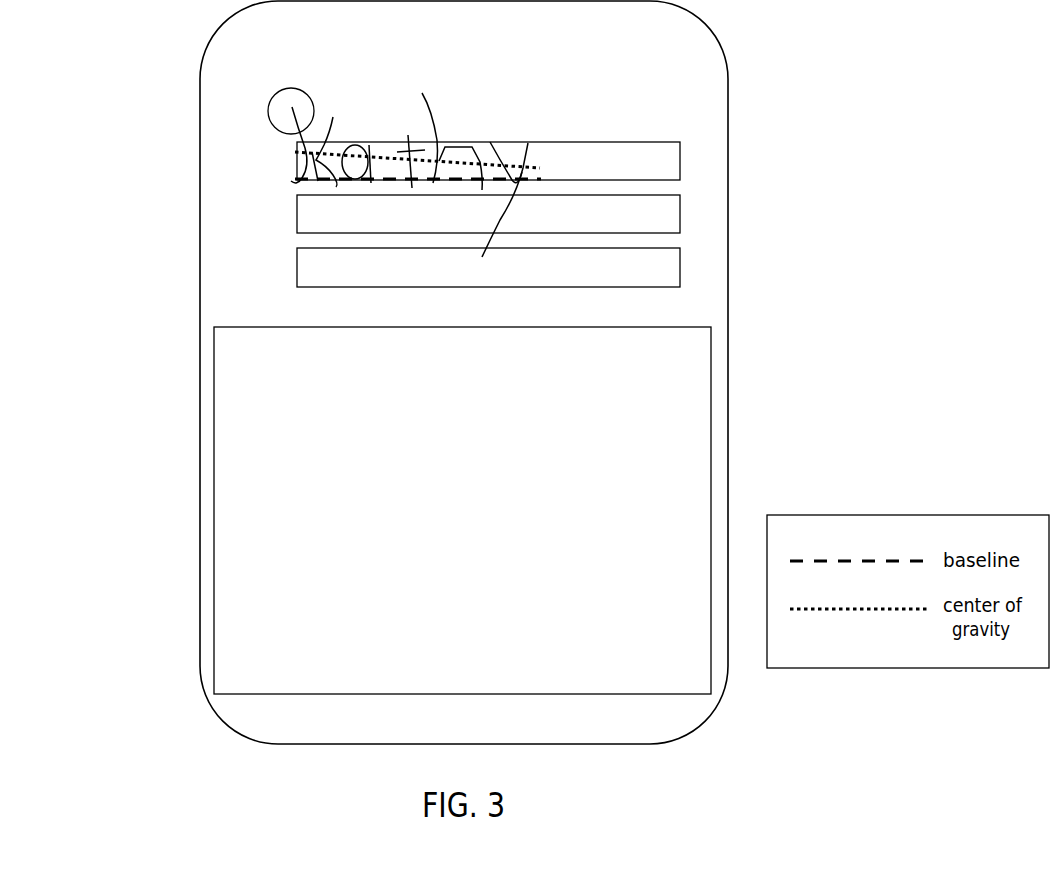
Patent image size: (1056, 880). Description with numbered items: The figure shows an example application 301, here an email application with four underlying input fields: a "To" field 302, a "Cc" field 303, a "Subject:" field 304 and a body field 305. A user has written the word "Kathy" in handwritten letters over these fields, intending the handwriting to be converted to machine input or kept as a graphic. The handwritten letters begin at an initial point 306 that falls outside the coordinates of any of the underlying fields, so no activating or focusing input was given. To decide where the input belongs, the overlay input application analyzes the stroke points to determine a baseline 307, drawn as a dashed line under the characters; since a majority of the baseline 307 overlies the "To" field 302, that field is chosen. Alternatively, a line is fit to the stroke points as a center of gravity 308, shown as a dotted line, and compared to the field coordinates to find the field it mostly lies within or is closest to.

The example application 301 is at (200, 234).
The "To" field 302 is at (670, 160).
The "Cc" field 303 is at (670, 212).
The "Subject:" field 304 is at (670, 268).
The body field 305 is at (677, 380).
The initial point 306 is at (267, 108).
The baseline 307 is at (542, 178).
The center of gravity 308 is at (465, 162).